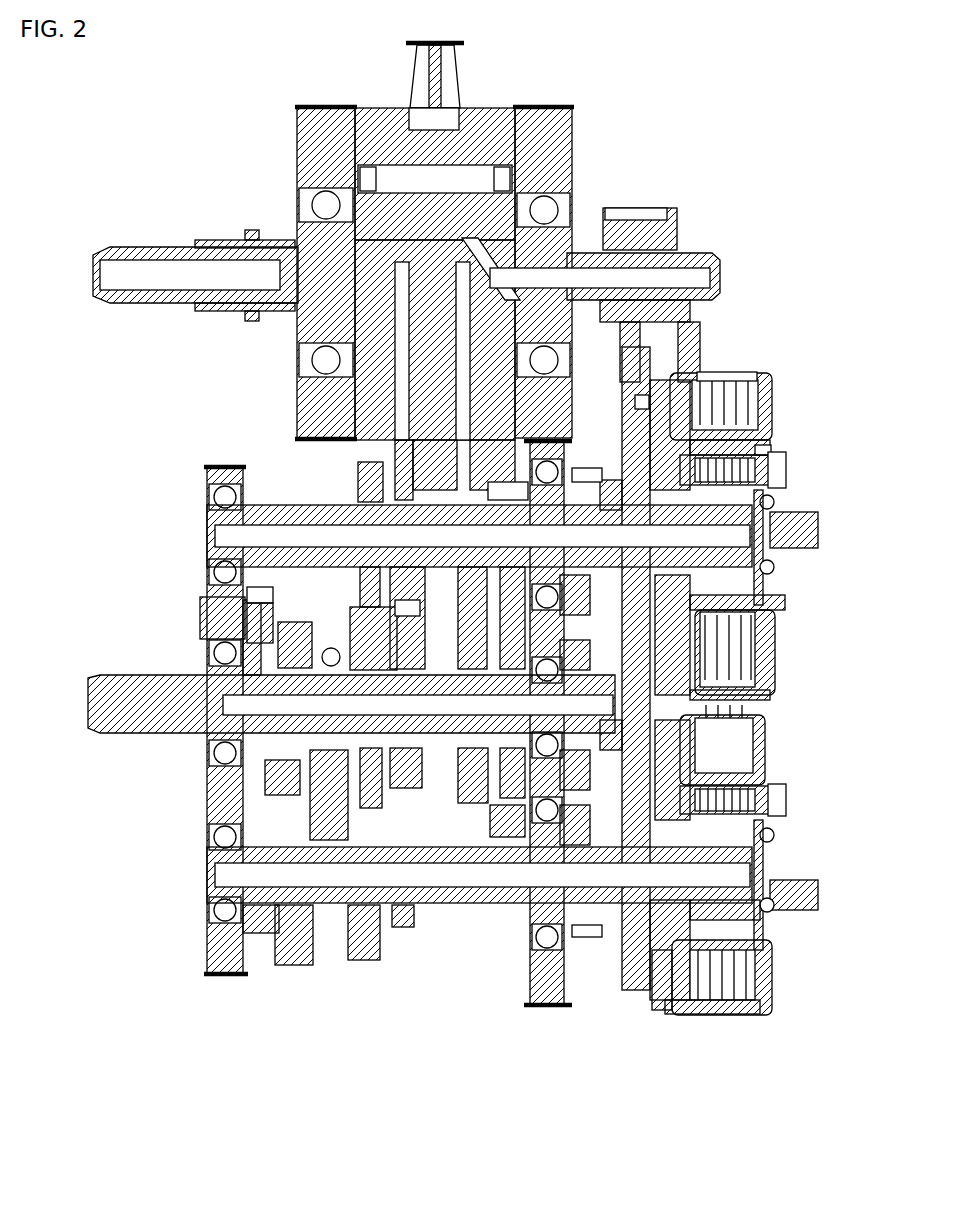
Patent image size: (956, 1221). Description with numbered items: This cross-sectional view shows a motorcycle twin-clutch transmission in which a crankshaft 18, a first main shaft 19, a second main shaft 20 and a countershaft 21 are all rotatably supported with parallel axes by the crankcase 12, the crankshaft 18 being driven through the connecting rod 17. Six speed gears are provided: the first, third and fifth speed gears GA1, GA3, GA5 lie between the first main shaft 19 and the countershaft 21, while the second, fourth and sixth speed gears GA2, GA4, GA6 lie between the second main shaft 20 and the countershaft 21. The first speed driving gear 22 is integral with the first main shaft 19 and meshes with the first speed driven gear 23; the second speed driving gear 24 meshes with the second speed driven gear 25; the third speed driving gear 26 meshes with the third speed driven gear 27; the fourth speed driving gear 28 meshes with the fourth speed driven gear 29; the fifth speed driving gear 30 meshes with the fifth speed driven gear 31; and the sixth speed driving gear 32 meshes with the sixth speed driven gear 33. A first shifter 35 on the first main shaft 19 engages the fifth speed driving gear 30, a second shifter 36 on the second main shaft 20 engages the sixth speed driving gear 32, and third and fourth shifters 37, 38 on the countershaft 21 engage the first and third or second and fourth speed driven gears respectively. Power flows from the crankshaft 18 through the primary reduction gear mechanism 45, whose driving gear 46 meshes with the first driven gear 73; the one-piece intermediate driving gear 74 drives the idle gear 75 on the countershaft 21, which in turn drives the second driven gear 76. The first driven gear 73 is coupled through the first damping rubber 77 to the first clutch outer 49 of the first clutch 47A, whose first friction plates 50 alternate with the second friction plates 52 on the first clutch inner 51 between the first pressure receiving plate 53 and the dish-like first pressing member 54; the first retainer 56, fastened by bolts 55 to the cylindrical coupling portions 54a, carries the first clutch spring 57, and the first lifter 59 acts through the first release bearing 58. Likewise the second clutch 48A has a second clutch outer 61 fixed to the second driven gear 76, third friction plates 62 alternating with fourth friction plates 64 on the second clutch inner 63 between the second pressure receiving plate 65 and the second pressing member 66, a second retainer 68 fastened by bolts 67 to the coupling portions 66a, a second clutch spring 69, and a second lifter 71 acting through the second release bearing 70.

The crankcase 12 is at (300, 410).
The connecting rod 17 is at (440, 72).
The crankshaft 18 is at (688, 250).
The first main shaft 19 is at (302, 515).
The second main shaft 20 is at (210, 856).
The countershaft 21 is at (160, 690).
The first speed driving gear 22 is at (478, 455).
The first speed driven gear 23 is at (509, 840).
The second speed driving gear 24 is at (245, 930).
The second speed driven gear 25 is at (250, 596).
The third speed driving gear 26 is at (378, 450).
The third speed driven gear 27 is at (372, 615).
The fourth speed driving gear 28 is at (362, 955).
The fourth speed driven gear 29 is at (350, 782).
The fifth speed driving gear 30 is at (440, 455).
The fifth speed driven gear 31 is at (470, 790).
The sixth speed driving gear 32 is at (296, 968).
The sixth speed driven gear 33 is at (290, 625).
The first shifter 35 is at (368, 475).
The second shifter 36 is at (405, 928).
The third shifter 37 is at (440, 640).
The fourth shifter 38 is at (331, 650).
The primary reduction gear mechanism 45 is at (608, 205).
The driving gear 46 is at (633, 212).
The first clutch 47A is at (745, 345).
The second clutch 48A is at (655, 1030).
The first clutch outer 49 is at (748, 368).
The first friction plates 50 is at (735, 378).
The first clutch inner 51 is at (735, 612).
The second friction plates 52 is at (750, 640).
The first pressure receiving plate 53 is at (755, 680).
The first pressing member 54 is at (690, 392).
The cylindrical coupling portions 54a is at (770, 440).
The bolts 55 is at (786, 465).
The first retainer 56 is at (762, 615).
The first clutch spring 57 is at (765, 445).
The first release bearing 58 is at (775, 503).
The first lifter 59 is at (805, 548).
The second clutch outer 61 is at (678, 1035).
The third friction plates 62 is at (735, 705).
The second clutch inner 63 is at (745, 925).
The fourth friction plates 64 is at (740, 1010).
The second pressure receiving plate 65 is at (770, 1012).
The second pressing member 66 is at (670, 1003).
The cylindrical coupling portions 66a is at (765, 775).
The bolts 67 is at (788, 798).
The second retainer 68 is at (765, 945).
The second clutch spring 69 is at (775, 830).
The second release bearing 70 is at (775, 906).
The second lifter 71 is at (805, 885).
The first driven gear 73 is at (648, 360).
The intermediate driving gear 74 is at (587, 468).
The idle gear 75 is at (560, 600).
The second driven gear 76 is at (588, 937).
The first damping rubber 77 is at (635, 400).
The first speed gear GA1 is at (510, 480).
The second speed gear GA2 is at (262, 940).
The third speed gear GA3 is at (420, 800).
The fourth speed gear GA4 is at (382, 962).
The fifth speed gear GA5 is at (481, 795).
The sixth speed gear GA6 is at (314, 970).